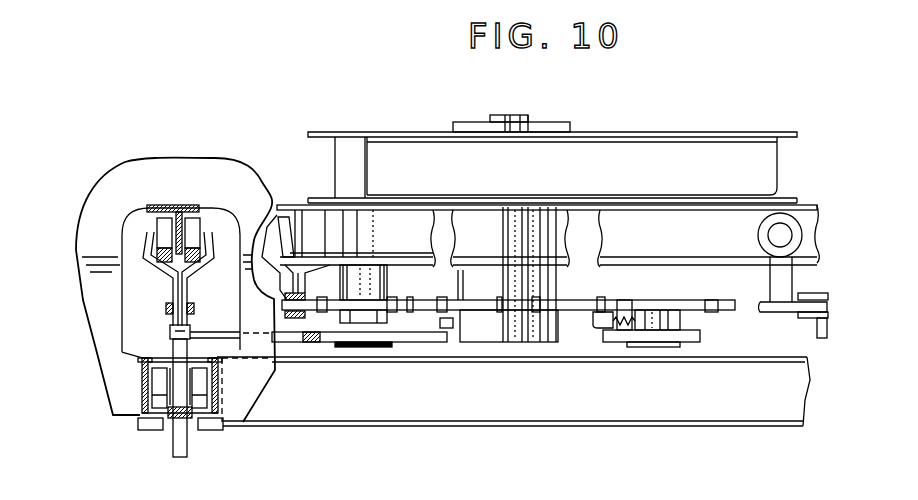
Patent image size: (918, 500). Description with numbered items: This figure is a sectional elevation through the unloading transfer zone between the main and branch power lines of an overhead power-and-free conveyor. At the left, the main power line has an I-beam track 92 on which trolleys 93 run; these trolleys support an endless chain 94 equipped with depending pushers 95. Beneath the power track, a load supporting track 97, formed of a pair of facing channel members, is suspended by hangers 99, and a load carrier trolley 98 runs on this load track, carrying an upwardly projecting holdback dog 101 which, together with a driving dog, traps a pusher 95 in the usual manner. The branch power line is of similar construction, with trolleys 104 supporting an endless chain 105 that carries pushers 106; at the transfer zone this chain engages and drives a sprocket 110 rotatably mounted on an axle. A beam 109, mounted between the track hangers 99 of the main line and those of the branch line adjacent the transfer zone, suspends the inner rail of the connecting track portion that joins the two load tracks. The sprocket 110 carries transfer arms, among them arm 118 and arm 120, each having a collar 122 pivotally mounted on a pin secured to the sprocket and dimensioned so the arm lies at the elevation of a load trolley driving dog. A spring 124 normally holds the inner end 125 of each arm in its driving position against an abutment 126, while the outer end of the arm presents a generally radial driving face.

The I-beam track 92 is at (160, 211).
The trolleys 93 is at (172, 274).
The endless chain 94 is at (190, 312).
The pushers 95 is at (170, 329).
The load supporting track 97 is at (138, 398).
The trolley 98 is at (180, 421).
The hangers 99 is at (205, 163).
The holdback dog 101 is at (167, 342).
The trolleys 104 is at (256, 187).
The endless chain 105 is at (765, 308).
The pushers 106 is at (817, 324).
The beam 109 is at (233, 424).
The sprocket 110 is at (628, 302).
The transfer arm 118 is at (328, 338).
The transfer arm 120 is at (702, 338).
The collar 122 is at (368, 347).
The spring 124 is at (608, 325).
The inner end 125 is at (445, 343).
The abutment 126 is at (452, 313).